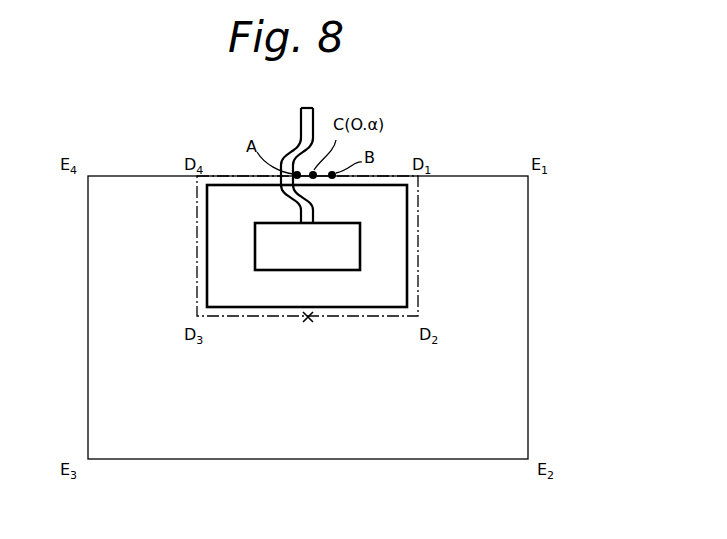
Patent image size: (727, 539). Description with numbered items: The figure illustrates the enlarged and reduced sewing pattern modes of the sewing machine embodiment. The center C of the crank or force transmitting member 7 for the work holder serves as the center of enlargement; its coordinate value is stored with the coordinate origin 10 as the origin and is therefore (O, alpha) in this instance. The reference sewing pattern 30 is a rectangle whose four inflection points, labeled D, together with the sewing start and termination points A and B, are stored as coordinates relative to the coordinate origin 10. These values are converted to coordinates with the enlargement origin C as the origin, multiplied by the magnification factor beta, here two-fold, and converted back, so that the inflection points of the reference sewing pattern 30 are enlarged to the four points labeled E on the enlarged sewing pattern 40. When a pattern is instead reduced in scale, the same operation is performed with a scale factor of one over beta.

The force transmitting member 7 is at (291, 158).
The reference sewing pattern 30 is at (420, 195).
The enlarged sewing pattern 40 is at (528, 225).
The coordinate origin 10 is at (307, 322).